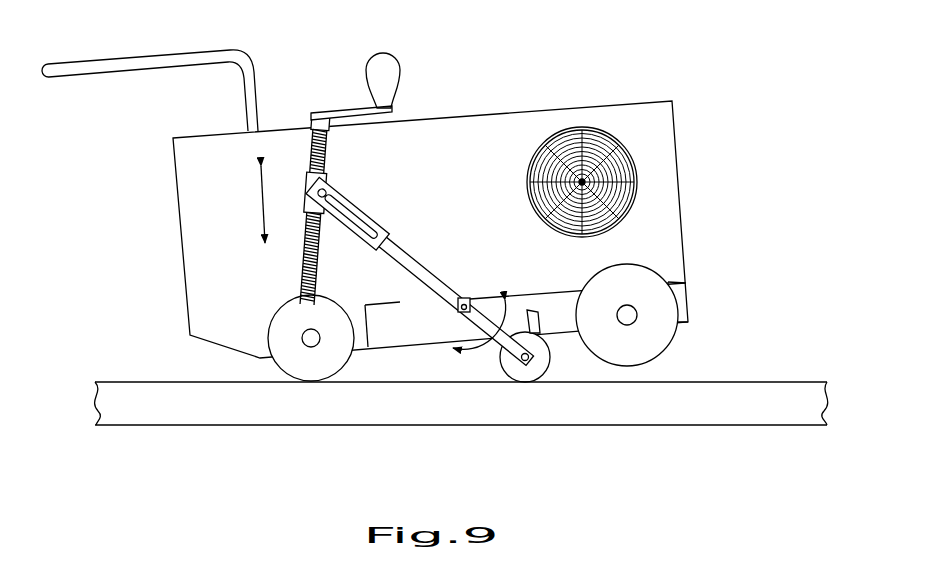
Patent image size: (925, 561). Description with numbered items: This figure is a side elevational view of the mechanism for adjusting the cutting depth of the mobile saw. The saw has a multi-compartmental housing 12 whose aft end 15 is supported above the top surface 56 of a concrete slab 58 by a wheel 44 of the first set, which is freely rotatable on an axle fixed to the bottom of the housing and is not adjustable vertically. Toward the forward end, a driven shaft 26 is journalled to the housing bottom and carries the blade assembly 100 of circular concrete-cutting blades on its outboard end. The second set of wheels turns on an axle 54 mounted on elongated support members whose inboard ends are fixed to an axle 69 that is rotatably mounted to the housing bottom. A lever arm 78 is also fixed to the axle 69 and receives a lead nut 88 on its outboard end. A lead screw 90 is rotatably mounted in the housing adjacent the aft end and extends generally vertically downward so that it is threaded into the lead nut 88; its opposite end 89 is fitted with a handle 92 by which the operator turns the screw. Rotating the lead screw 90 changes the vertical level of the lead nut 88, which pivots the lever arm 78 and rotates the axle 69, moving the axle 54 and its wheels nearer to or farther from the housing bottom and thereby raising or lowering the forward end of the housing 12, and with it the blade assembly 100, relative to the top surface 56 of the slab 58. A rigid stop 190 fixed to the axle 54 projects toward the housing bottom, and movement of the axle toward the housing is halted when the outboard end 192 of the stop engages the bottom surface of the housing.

The housing 12 is at (475, 112).
The aft end 15 is at (178, 222).
The driven shaft 26 is at (631, 314).
The wheel 44 is at (276, 363).
The axle 54 is at (524, 382).
The top surface 56 is at (801, 382).
The concrete slab 58 is at (820, 398).
The axle 69 is at (461, 297).
The lever arm 78 is at (482, 320).
The lead nut 88 is at (334, 176).
The opposite end 89 is at (311, 128).
The lead screw 90 is at (340, 261).
The handle 92 is at (393, 66).
The blade assembly 100 is at (682, 331).
The rigid stop 190 is at (558, 300).
The outboard end 192 is at (531, 310).